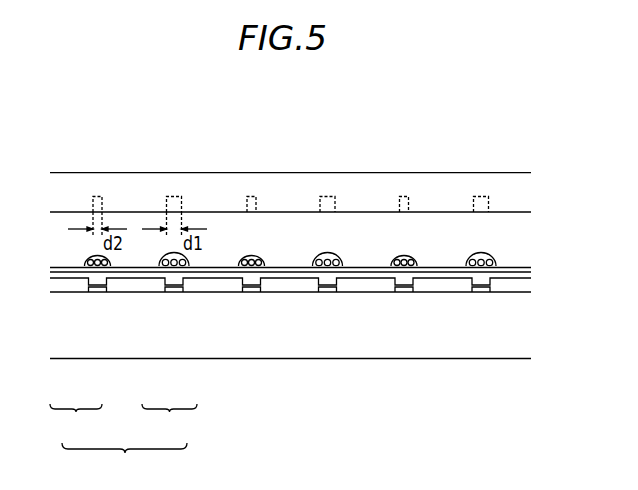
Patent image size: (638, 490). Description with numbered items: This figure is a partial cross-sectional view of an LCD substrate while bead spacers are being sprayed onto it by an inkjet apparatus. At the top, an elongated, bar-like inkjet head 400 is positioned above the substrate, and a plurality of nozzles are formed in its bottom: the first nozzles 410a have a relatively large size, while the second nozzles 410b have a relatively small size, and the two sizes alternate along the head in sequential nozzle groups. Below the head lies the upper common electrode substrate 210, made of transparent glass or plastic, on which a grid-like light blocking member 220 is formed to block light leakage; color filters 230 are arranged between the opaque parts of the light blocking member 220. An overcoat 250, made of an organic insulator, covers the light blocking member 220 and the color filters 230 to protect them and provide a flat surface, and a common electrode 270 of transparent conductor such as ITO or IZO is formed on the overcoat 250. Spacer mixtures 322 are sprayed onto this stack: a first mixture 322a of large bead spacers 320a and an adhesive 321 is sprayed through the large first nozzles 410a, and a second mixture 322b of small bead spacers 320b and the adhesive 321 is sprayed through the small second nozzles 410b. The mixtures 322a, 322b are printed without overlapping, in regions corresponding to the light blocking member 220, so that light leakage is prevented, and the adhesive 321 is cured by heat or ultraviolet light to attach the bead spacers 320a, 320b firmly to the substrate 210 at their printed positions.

The substrate 210 is at (513, 326).
The light blocking member 220 is at (252, 290).
The color filters 230 is at (368, 285).
The overcoat 250 is at (281, 275).
The common electrode 270 is at (298, 269).
The large bead spacers 320a is at (172, 265).
The small bead spacers 320b is at (92, 264).
The adhesive 321 is at (88, 251).
The spacer mixtures 322 is at (124, 461).
The first spacer mixture 322a is at (169, 422).
The second spacer mixture 322b is at (76, 422).
The inkjet head 400 is at (513, 193).
The first nozzles 410a is at (175, 196).
The second nozzles 410b is at (99, 196).